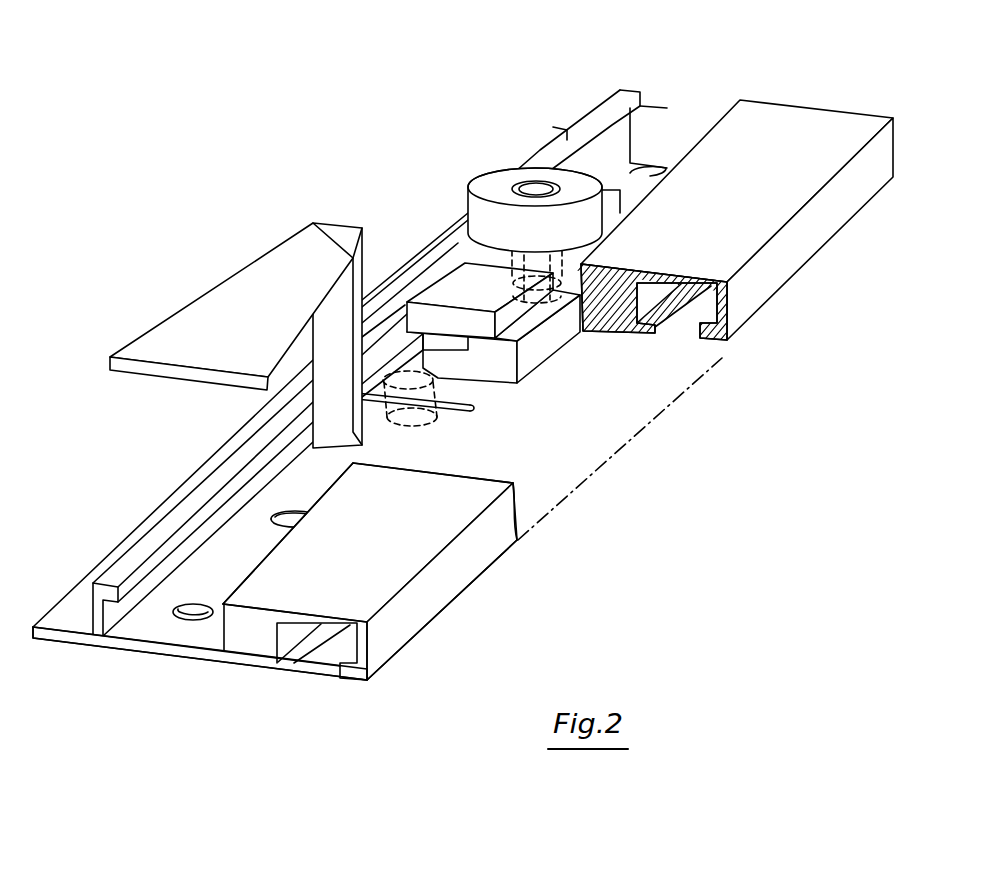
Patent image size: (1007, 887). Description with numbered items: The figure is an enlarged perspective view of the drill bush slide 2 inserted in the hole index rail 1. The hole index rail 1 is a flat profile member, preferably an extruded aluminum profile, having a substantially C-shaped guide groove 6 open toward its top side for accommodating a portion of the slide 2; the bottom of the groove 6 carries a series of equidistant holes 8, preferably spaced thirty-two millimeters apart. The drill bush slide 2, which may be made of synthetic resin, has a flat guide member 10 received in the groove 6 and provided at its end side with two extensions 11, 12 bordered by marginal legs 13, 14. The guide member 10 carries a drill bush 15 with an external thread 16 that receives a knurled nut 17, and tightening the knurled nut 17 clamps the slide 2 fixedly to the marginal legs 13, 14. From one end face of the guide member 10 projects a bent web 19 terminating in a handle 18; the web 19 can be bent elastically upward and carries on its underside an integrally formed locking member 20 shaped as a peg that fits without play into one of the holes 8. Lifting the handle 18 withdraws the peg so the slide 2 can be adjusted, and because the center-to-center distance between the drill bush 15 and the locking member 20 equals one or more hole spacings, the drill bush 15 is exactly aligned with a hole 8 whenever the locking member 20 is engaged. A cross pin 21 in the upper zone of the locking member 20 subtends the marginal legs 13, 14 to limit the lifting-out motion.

The hole index rail 1 is at (799, 252).
The drill bush slide 2 is at (483, 254).
The guide groove 6 is at (672, 122).
The holes 8 is at (195, 604).
The guide member 10 is at (553, 333).
The extension 11 is at (435, 292).
The extension 12 is at (612, 183).
The marginal leg 13 is at (130, 586).
The marginal leg 14 is at (232, 597).
The drill bush 15 is at (528, 177).
The external thread 16 is at (480, 243).
The knurled nut 17 is at (490, 192).
The handle 18 is at (200, 317).
The bent web 19 is at (440, 344).
The locking member 20 is at (430, 425).
The cross pin 21 is at (482, 410).